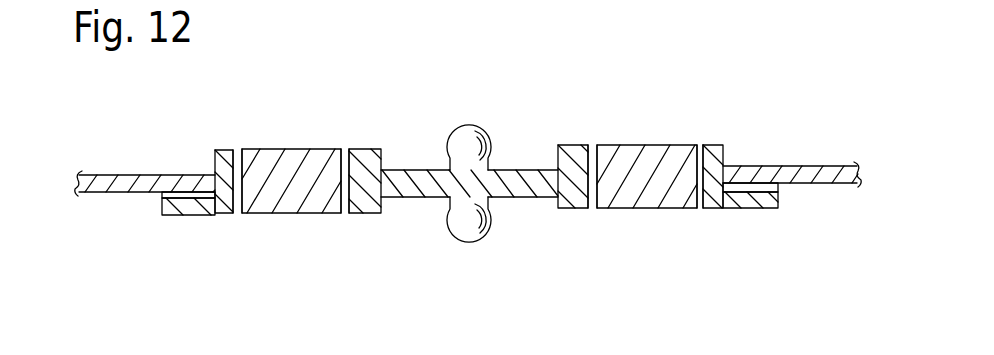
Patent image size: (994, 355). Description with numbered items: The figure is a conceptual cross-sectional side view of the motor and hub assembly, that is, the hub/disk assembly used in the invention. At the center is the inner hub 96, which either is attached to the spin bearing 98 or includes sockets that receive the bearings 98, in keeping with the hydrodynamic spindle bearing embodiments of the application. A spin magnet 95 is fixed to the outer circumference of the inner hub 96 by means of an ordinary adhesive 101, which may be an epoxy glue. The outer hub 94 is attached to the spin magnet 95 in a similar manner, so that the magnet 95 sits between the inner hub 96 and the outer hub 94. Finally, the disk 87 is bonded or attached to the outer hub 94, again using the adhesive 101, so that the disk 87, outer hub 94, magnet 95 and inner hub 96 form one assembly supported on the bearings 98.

The disk 87 is at (468, 135).
The outer hub 94 is at (469, 229).
The spin magnet 95 is at (470, 144).
The inner hub 96 is at (467, 137).
The spin bearing 98 is at (437, 184).
The adhesive 101 is at (469, 206).